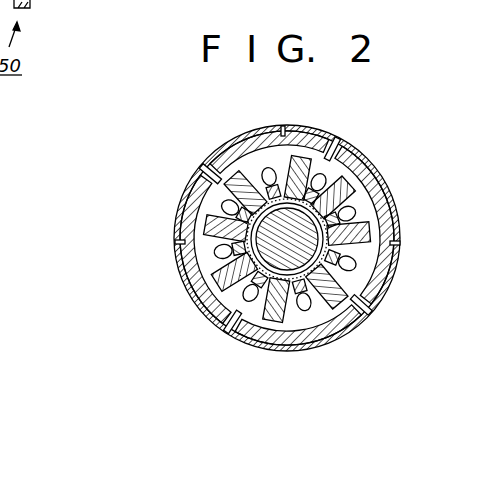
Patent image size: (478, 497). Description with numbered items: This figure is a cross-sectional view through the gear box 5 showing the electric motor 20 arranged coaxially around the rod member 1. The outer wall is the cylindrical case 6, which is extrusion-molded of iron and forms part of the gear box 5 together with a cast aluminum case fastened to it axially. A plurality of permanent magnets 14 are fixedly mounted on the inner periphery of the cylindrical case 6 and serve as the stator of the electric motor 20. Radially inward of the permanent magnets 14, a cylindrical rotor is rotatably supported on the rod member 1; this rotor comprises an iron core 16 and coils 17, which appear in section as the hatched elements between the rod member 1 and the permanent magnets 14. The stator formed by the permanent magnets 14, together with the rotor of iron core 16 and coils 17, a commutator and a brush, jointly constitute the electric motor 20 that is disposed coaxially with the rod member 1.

The rod member 1 is at (190, 297).
The gear box 5 is at (362, 300).
The cylindrical case 6 is at (377, 170).
The permanent magnets 14 is at (283, 134).
The iron core 16 is at (178, 210).
The coils 17 is at (385, 200).
The electric motor 20 is at (323, 160).